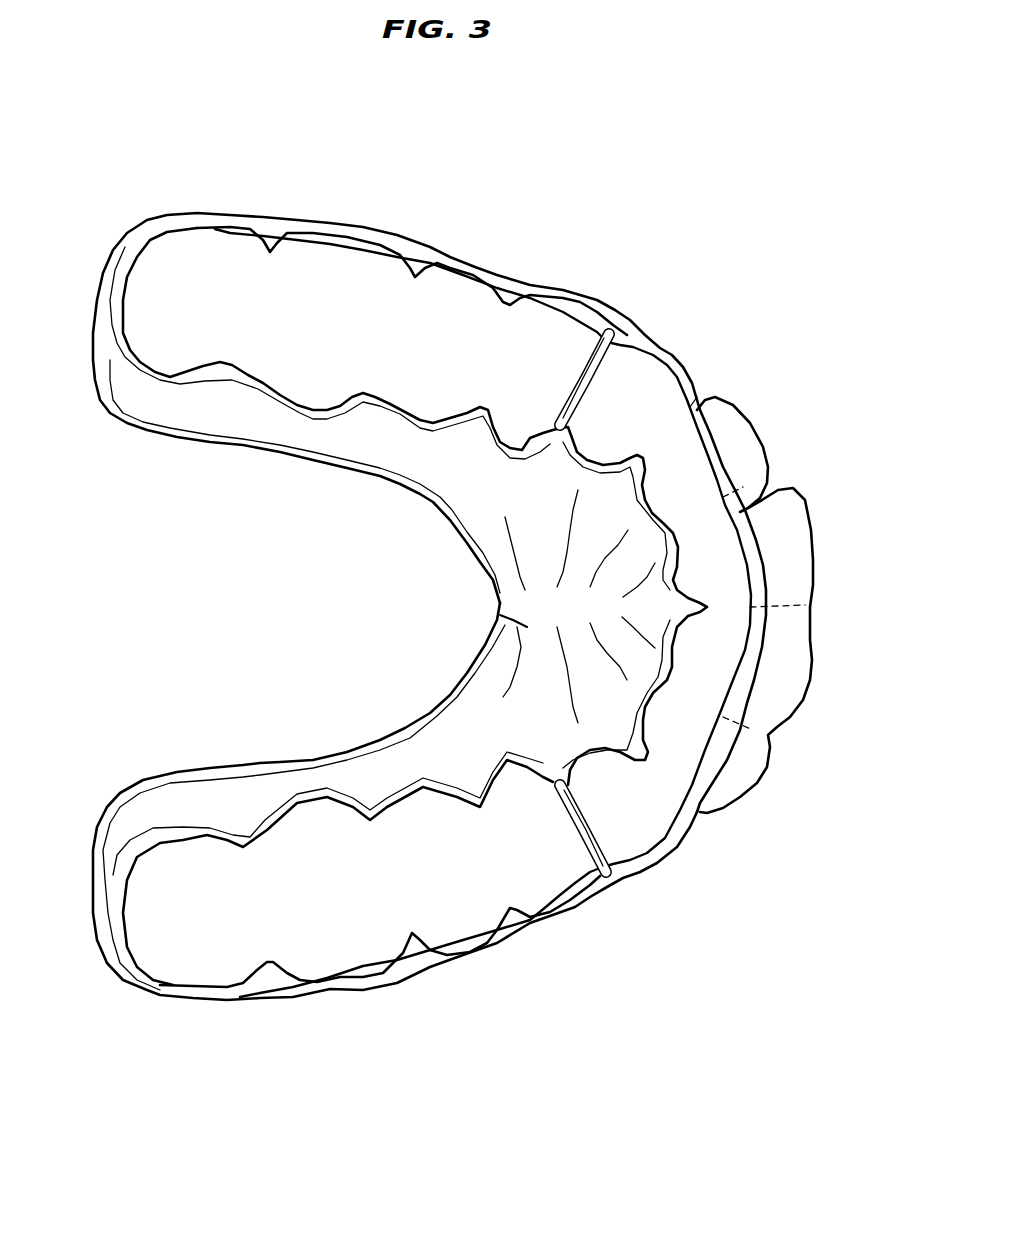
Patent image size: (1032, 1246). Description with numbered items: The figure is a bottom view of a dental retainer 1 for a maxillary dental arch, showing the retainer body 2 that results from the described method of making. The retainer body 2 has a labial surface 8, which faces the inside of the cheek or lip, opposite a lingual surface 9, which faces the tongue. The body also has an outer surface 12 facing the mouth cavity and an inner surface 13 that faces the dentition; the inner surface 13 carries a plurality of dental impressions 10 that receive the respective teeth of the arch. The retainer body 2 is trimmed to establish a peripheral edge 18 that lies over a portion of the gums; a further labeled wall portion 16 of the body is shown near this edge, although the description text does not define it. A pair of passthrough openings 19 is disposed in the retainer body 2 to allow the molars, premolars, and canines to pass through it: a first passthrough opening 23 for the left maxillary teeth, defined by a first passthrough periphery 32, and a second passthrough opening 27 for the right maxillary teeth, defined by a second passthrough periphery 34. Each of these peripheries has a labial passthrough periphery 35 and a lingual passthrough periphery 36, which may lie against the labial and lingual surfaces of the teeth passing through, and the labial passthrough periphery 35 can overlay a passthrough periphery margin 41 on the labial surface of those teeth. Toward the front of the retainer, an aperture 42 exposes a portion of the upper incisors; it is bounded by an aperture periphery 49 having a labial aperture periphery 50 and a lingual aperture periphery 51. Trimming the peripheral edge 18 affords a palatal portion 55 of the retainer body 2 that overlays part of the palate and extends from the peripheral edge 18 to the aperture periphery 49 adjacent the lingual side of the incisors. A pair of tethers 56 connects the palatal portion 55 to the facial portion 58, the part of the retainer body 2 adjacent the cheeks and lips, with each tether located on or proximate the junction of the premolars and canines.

The dental retainer 1 is at (450, 606).
The retainer body 2 is at (474, 590).
The labial surface 8 is at (517, 215).
The lingual surface 9 is at (222, 425).
The dental impressions 10 is at (483, 613).
The outer surface 12 is at (330, 395).
The inner surface 13 is at (488, 471).
The bottom wall 16 is at (305, 476).
The peripheral edge 18 is at (481, 540).
The pair of passthrough openings 19 is at (397, 629).
The first passthrough opening 23 is at (320, 920).
The second passthrough opening 27 is at (415, 481).
The first passthrough periphery 32 is at (315, 800).
The second passthrough periphery 34 is at (431, 515).
The labial passthrough periphery 35 is at (380, 562).
The lingual passthrough periphery 36 is at (413, 587).
The passthrough periphery margin 41 is at (547, 724).
The aperture 42 is at (781, 650).
The aperture periphery 49 is at (629, 572).
The labial aperture periphery 50 is at (757, 431).
The lingual aperture periphery 51 is at (677, 572).
The palatal portion 55 is at (437, 630).
The tethers 56 is at (638, 594).
The facial portion 58 is at (640, 300).